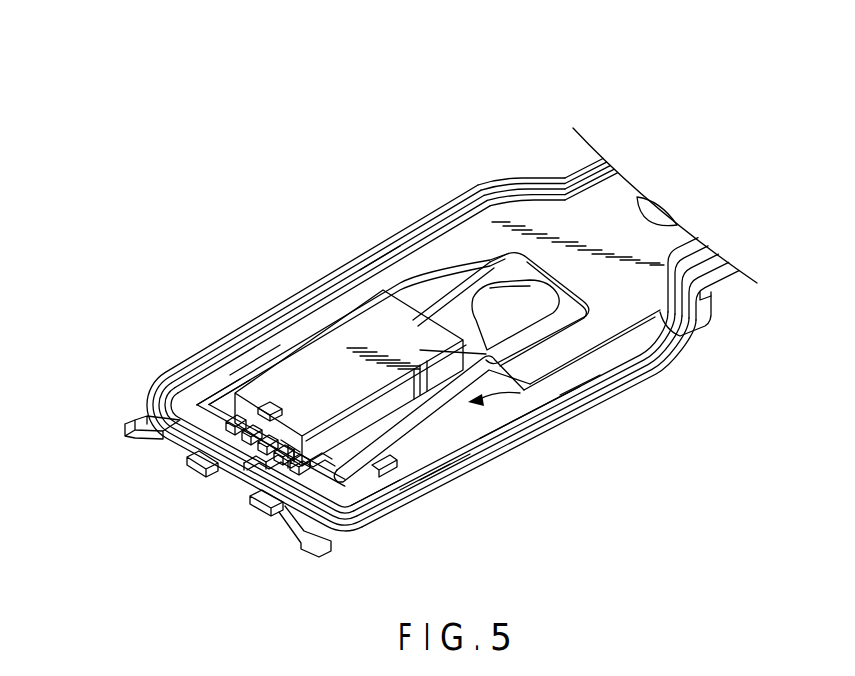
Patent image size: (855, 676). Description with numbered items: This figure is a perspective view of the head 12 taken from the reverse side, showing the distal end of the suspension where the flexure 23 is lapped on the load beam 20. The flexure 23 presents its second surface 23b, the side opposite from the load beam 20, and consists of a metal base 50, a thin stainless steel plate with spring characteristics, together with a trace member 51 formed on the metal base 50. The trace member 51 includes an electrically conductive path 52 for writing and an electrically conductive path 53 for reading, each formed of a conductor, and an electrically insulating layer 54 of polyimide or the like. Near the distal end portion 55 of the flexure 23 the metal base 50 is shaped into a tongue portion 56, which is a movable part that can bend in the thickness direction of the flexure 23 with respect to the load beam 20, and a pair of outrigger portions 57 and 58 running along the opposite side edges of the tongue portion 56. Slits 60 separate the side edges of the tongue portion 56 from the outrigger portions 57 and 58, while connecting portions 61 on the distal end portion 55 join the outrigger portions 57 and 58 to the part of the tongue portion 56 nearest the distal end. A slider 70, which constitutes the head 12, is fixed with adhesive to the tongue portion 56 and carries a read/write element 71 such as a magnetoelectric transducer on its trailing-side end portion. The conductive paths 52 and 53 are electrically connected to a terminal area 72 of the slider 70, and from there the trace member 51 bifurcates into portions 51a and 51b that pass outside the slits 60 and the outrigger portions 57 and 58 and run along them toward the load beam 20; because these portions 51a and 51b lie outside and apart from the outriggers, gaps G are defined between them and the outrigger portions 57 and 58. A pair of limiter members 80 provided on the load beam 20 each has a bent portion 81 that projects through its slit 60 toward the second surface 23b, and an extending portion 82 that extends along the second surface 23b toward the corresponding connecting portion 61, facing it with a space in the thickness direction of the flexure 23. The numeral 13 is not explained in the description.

The head 12 is at (114, 324).
The circuit board 13 is at (686, 121).
The load beam 20 is at (492, 262).
The flexure 23 is at (705, 255).
The second surface 23b is at (610, 313).
The metal base 50 is at (592, 223).
The trace member 51 is at (535, 185).
The portion 51a is at (540, 435).
The portion 51b is at (300, 285).
The electrically conductive path for writing 52 is at (160, 440).
The electrically conductive path for reading 53 is at (283, 512).
The electrically insulating layer 54 is at (240, 475).
The distal end portion 55 is at (191, 484).
The tongue portion 56 is at (477, 350).
The outrigger portion 57 is at (467, 433).
The outrigger portion 58 is at (290, 332).
The slit 60 is at (540, 407).
The connecting portion 61 is at (217, 413).
The slider 70 is at (372, 340).
The read/write element 71 is at (268, 410).
The terminal area 72 is at (290, 450).
The limiter member 80 is at (255, 345).
The bent portion 81 is at (415, 480).
The extending portion 82 is at (223, 382).
The gap G is at (385, 258).